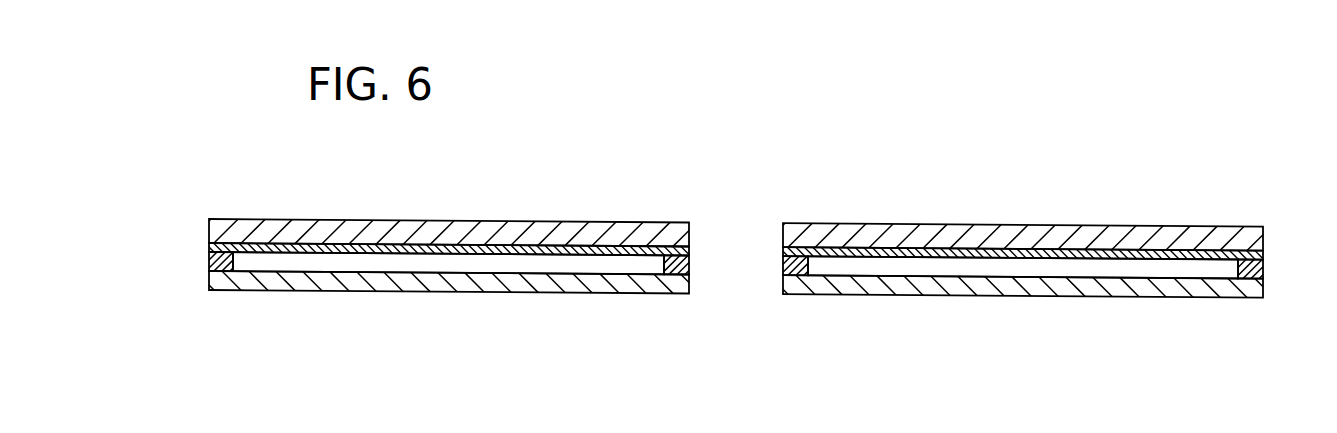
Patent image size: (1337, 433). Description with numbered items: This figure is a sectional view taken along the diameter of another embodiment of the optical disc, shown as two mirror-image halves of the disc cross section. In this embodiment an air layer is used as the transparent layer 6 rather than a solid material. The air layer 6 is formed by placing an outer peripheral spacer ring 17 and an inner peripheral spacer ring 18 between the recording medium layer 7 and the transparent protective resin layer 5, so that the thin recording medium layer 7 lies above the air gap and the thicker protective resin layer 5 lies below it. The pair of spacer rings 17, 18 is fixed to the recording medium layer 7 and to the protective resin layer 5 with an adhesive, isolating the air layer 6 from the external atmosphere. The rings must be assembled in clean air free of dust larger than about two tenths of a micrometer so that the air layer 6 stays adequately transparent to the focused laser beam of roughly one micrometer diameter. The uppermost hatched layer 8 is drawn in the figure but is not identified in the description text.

The transparent protective resin layer 5 is at (218, 291).
The transparent layer 6 is at (257, 262).
The recording medium layer 7 is at (209, 245).
The cover plate 8 is at (215, 219).
The outer peripheral spacer ring 17 is at (209, 264).
The inner peripheral spacer ring 18 is at (690, 259).